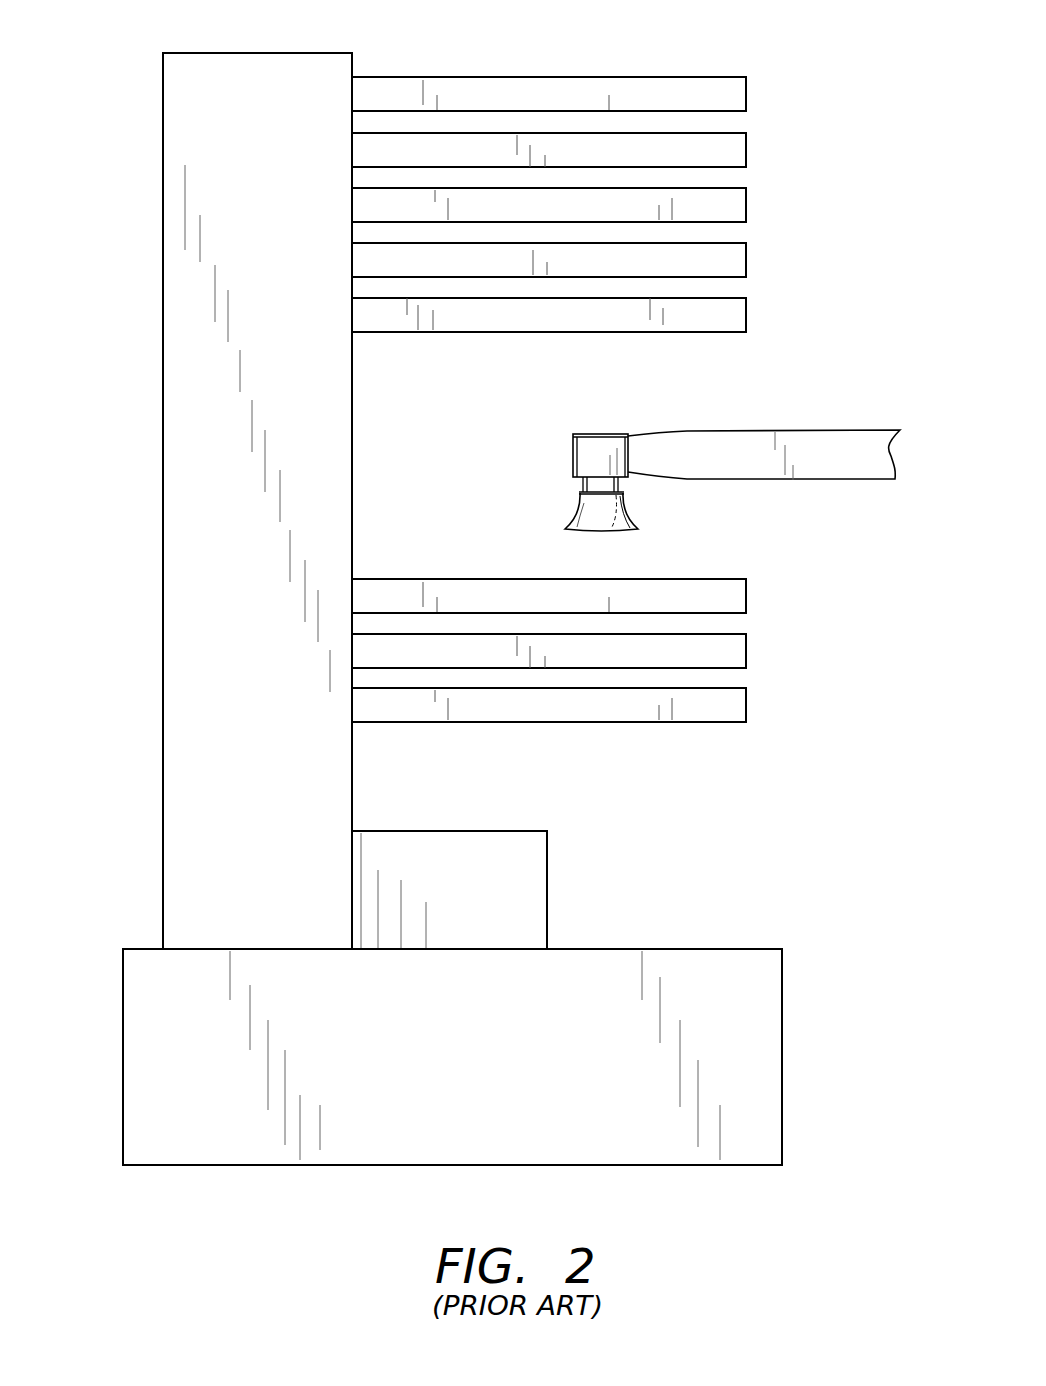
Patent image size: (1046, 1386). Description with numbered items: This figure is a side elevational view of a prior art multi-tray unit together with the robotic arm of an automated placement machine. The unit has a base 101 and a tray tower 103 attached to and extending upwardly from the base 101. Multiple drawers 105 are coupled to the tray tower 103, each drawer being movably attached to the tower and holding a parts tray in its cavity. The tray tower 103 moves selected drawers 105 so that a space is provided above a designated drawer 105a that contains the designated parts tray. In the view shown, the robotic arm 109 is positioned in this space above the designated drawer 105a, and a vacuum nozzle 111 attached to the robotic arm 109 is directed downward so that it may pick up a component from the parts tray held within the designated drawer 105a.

The base 101 is at (630, 949).
The tray tower 103 is at (198, 142).
The drawers 105 is at (731, 87).
The designated drawer 105a is at (713, 592).
The robotic arm 109 is at (767, 430).
The vacuum nozzle 111 is at (585, 512).